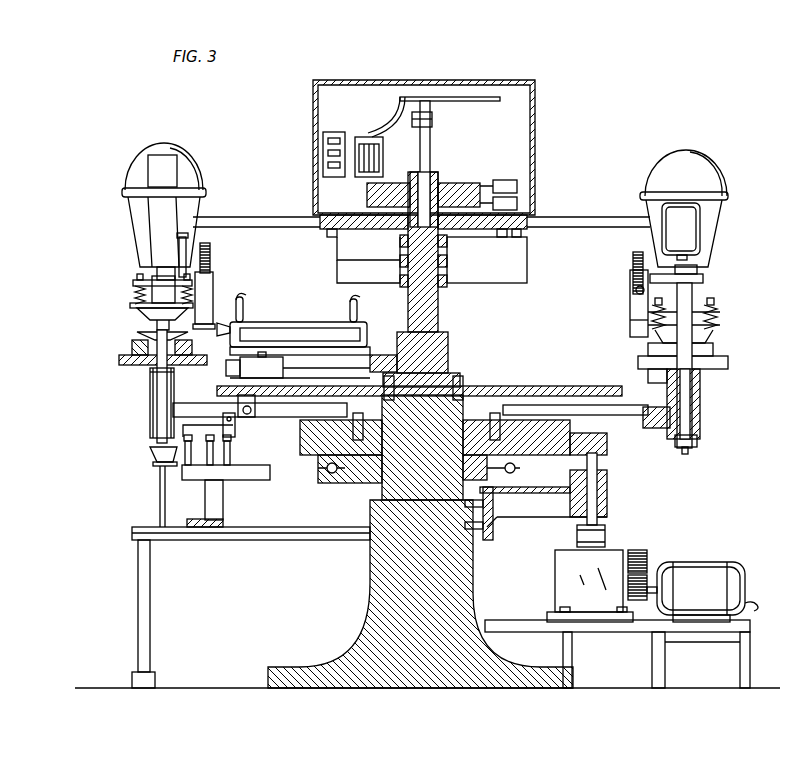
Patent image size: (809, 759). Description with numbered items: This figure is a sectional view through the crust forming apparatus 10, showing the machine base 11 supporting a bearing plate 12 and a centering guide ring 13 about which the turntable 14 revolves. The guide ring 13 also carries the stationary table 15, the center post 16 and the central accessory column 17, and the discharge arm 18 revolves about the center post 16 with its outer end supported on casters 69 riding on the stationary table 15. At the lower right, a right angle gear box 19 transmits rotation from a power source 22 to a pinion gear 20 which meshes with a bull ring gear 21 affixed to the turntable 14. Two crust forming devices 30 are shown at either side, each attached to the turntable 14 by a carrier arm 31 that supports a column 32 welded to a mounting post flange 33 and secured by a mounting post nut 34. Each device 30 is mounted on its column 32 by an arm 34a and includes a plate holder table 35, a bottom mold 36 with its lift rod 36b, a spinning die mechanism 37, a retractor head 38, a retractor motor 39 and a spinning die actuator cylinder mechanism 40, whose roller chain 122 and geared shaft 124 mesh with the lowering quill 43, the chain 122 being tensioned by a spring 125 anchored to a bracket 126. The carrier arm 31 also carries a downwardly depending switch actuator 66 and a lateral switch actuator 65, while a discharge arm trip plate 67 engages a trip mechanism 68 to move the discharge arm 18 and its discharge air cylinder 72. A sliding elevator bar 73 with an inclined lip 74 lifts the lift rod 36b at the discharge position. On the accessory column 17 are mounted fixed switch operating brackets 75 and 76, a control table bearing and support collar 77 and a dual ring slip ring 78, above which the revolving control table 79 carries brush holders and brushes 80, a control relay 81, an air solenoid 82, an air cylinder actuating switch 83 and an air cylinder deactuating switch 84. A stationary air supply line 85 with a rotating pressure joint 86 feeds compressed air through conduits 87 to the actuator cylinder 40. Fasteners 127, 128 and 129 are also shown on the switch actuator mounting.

The crust forming apparatus 10 is at (697, 531).
The machine base 11 is at (418, 582).
The bearing plate 12 is at (340, 485).
The centering guide ring 13 is at (411, 423).
The turntable 14 is at (493, 390).
The stationary table 15 is at (567, 390).
The center post 16 is at (448, 336).
The accessory column 17 is at (438, 301).
The discharge arm 18 is at (380, 355).
The right angle gear box 19 is at (615, 550).
The pinion gear 20 is at (607, 440).
The bull ring gear 21 is at (570, 458).
The power source 22 is at (740, 564).
The crust forming device 30 is at (112, 170).
The carrier arm 31 is at (205, 404).
The column 32 is at (695, 300).
The mounting post flange 33 is at (700, 390).
The mounting post nut 34 is at (697, 441).
The arm 34a is at (150, 372).
The plate holder table 35 is at (119, 361).
The bottom mold 36 is at (132, 348).
The lift rod 36b is at (150, 430).
The spinning die mechanism 37 is at (121, 299).
The retractor head 38 is at (132, 222).
The retractor motor 39 is at (700, 231).
The spinning die actuator cylinder mechanism 40 is at (214, 290).
The lowering quill 43 is at (160, 270).
The switch actuator 65 is at (160, 476).
The switch actuator 66 is at (236, 432).
The discharge arm trip plate 67 is at (255, 408).
The trip mechanism 68 is at (262, 357).
The casters 69 is at (155, 376).
The discharge air cylinder 72 is at (296, 322).
The sliding elevator bar 73 is at (150, 452).
The inclined lip 74 is at (160, 464).
The switch operating bracket 75 is at (527, 271).
The switch operating bracket 76 is at (357, 262).
The control table bearing and support collar 77 is at (447, 241).
The dual ring slip ring 78 is at (438, 182).
The revolving control table 79 is at (535, 206).
The brush holders and brushes 80 is at (517, 186).
The control relay 81 is at (338, 132).
The air solenoid 82 is at (374, 140).
The air cylinder actuating switch 83 is at (327, 235).
The air cylinder deactuating switch 84 is at (355, 240).
The stationary air supply line 85 is at (431, 141).
The rotating pressure joint 86 is at (432, 118).
The conduits 87 is at (403, 97).
The roller chain 122 is at (211, 258).
The geared shaft 124 is at (187, 262).
The spring 125 is at (634, 287).
The bracket 126 is at (630, 315).
The screw 127 is at (190, 470).
The screw 128 is at (212, 470).
The screw 129 is at (229, 466).